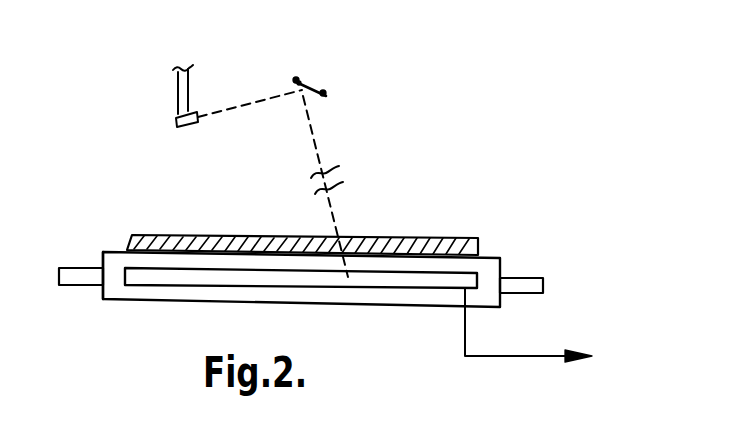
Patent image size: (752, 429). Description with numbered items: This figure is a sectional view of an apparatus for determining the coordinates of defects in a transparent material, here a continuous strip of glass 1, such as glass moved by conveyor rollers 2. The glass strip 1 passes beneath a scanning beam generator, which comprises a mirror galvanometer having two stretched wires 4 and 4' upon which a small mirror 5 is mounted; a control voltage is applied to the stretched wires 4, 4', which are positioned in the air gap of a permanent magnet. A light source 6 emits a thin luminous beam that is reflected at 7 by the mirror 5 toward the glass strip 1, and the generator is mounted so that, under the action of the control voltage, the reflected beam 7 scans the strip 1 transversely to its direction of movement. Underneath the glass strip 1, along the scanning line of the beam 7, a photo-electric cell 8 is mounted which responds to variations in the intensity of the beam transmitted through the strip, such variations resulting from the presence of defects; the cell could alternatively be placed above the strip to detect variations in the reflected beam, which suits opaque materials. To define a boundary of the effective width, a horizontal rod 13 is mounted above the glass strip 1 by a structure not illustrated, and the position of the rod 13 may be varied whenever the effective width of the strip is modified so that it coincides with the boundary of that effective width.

The strip of glass 1 is at (448, 248).
The conveyor rollers 2 is at (115, 265).
The stretched wire 4 is at (309, 55).
The stretched wire 4' is at (358, 72).
The small mirror 5 is at (298, 82).
The light source 6 is at (176, 122).
The reflected beam 7 is at (340, 220).
The photo-electric cell 8 is at (385, 278).
The horizontal rod 13 is at (148, 228).